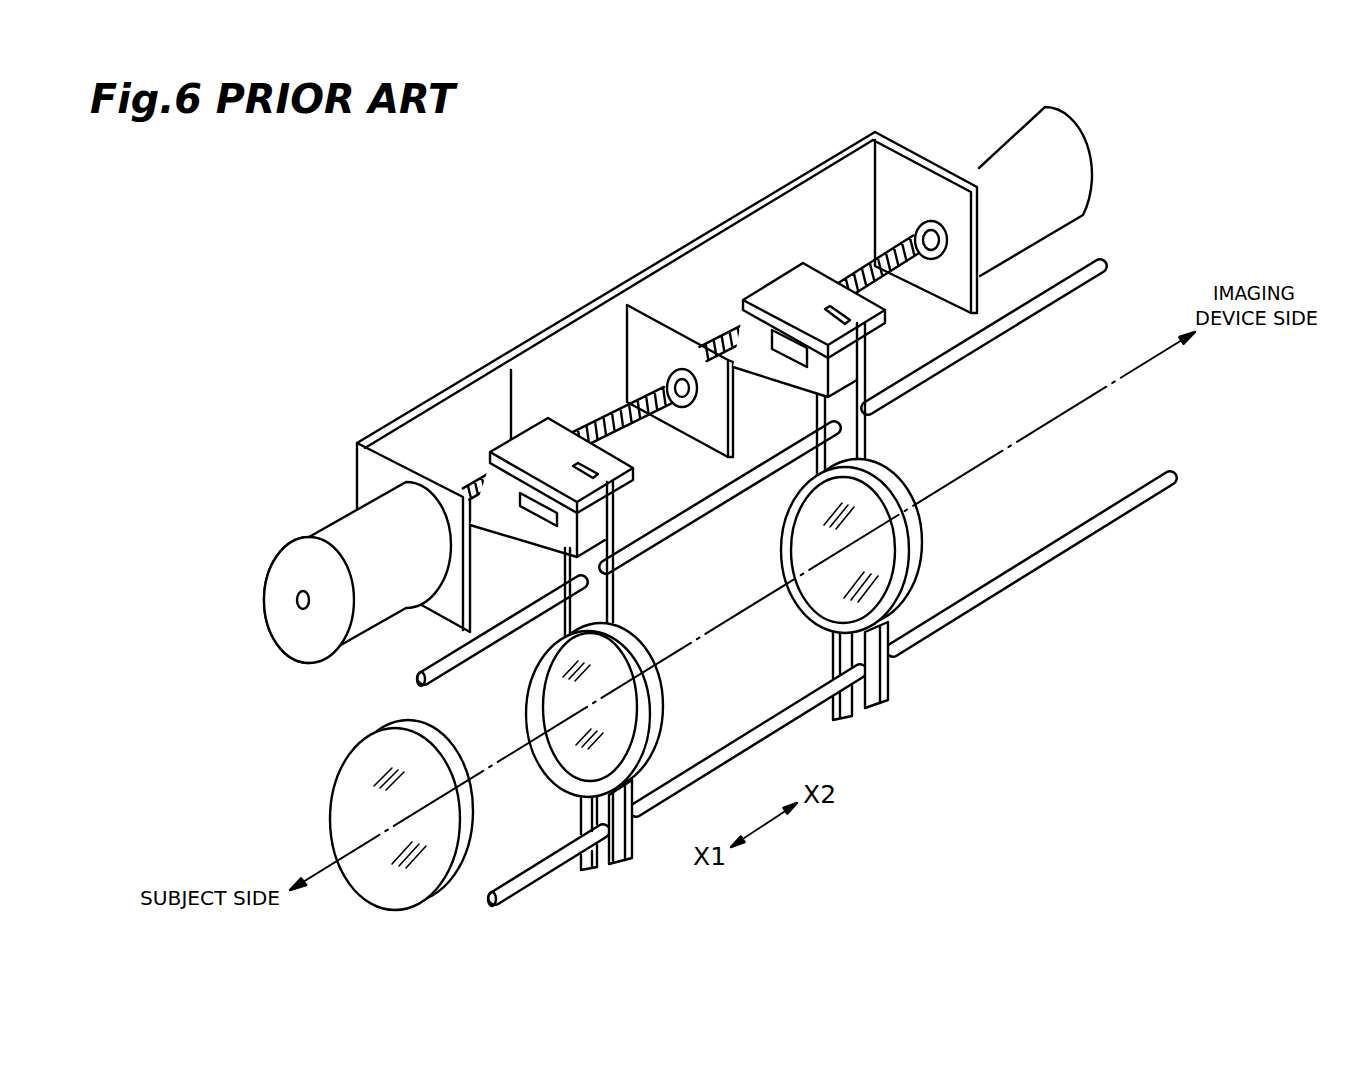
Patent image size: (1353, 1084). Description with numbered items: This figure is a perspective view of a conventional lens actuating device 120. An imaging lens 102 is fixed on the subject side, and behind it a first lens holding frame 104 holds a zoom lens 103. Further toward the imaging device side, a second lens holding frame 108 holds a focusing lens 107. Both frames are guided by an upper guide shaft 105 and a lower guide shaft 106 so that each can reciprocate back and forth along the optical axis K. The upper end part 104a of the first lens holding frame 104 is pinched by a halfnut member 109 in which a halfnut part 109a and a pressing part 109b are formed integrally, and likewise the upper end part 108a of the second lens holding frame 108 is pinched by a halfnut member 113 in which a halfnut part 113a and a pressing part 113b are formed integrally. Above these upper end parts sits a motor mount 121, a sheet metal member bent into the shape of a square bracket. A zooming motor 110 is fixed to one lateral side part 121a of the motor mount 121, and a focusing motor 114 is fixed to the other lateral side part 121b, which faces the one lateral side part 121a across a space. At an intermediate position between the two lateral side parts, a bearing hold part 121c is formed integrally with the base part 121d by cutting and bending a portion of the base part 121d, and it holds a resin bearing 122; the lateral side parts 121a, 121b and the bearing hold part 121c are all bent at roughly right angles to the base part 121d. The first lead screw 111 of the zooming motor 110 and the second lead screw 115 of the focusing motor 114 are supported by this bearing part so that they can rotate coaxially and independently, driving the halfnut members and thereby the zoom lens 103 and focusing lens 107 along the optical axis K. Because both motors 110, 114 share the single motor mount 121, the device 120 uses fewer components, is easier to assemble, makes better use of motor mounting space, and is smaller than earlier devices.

The imaging lens 102 is at (347, 802).
The zoom lens 103 is at (547, 708).
The first lens holding frame 104 is at (635, 676).
The upper end part 104a is at (613, 523).
The upper guide shaft 105 is at (1100, 260).
The lower guide shaft 106 is at (1174, 480).
The focusing lens 107 is at (815, 548).
The second lens holding frame 108 is at (892, 521).
The upper end part 108a is at (897, 390).
The halfnut member 109 is at (438, 294).
The halfnut part 109a is at (455, 478).
The pressing part 109b is at (478, 480).
The zooming motor 110 is at (330, 532).
The first lead screw 111 is at (630, 480).
The halfnut member 113 is at (738, 142).
The halfnut part 113a is at (737, 330).
The pressing part 113b is at (773, 275).
The focusing motor 114 is at (1083, 167).
The second lead screw 115 is at (887, 273).
The lens actuating device 120 is at (487, 197).
The motor mount 121 is at (633, 352).
The one lateral side part 121a is at (367, 478).
The other lateral side part 121b is at (905, 148).
The bearing hold part 121c is at (657, 305).
The base part 121d is at (560, 318).
The resin bearing 122 is at (733, 413).
The optical axis K is at (1080, 408).